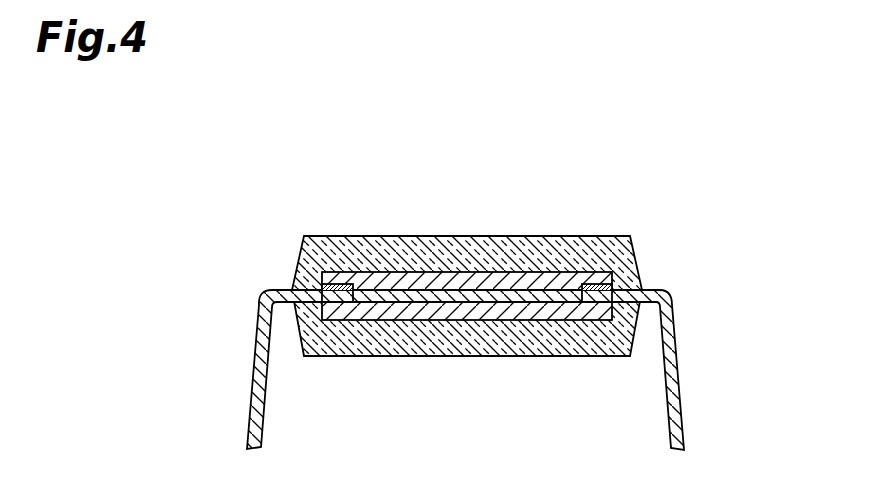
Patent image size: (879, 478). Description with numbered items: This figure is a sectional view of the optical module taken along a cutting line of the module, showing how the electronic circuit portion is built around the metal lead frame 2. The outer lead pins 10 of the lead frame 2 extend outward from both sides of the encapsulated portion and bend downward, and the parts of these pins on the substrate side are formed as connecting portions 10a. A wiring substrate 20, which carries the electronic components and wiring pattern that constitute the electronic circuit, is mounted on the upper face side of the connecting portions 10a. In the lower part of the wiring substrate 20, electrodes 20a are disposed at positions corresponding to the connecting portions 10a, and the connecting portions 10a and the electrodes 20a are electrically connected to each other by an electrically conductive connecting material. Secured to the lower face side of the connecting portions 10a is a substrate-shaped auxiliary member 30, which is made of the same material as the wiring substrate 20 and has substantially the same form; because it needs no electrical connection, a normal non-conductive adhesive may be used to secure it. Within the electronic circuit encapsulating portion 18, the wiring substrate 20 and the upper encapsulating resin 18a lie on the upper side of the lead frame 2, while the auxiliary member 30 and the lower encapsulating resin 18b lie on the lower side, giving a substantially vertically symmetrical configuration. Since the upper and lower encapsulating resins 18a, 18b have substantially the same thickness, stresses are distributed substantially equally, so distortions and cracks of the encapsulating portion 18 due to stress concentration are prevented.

The lead frame 2 is at (466, 360).
The outer lead pins 10 is at (254, 378).
The connecting portions 10a is at (337, 302).
The electronic circuit encapsulating portion 18 is at (382, 221).
The upper encapsulating resin 18a is at (549, 236).
The lower encapsulating resin 18b is at (537, 357).
The wiring substrate 20 is at (457, 272).
The electrodes 20a is at (322, 287).
The auxiliary member 30 is at (428, 320).